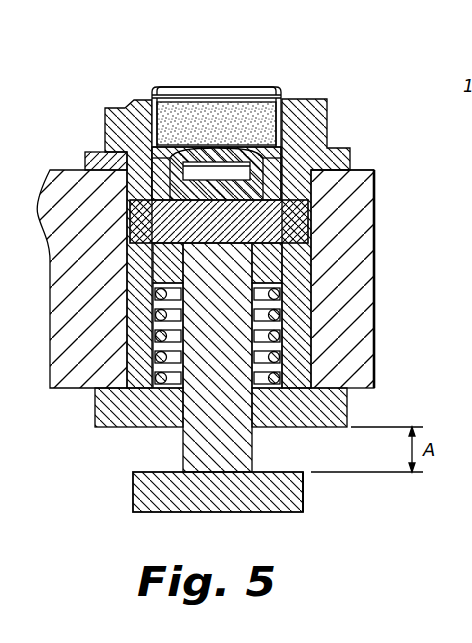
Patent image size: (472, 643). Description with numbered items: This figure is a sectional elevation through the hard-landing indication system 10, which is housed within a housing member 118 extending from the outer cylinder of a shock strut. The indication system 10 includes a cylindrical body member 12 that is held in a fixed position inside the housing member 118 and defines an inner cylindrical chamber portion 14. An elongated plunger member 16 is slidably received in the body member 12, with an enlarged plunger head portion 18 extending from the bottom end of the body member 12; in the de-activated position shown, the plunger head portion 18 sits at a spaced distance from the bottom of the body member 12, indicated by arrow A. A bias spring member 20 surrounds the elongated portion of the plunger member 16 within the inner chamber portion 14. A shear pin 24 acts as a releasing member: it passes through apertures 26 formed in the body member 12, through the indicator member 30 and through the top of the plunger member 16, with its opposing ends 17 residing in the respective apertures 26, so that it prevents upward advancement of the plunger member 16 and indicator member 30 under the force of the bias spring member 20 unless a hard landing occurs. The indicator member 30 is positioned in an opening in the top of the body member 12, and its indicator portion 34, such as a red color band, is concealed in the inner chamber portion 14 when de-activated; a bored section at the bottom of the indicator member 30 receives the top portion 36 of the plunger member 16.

The indication system 10 is at (313, 70).
The body member 12 is at (118, 412).
The inner cylindrical chamber portion 14 is at (276, 367).
The plunger member 16 is at (122, 488).
The plunger head portion 18 is at (300, 500).
The opposing ends of shear pin 17 is at (105, 127).
The bias spring member 20 is at (290, 307).
The shear pin 24 is at (374, 180).
The apertures 26 is at (105, 152).
The indicator member 30 is at (165, 87).
The indicator portion 34 is at (249, 95).
The top portion of plunger member 36 is at (216, 147).
The housing member 118 is at (378, 242).